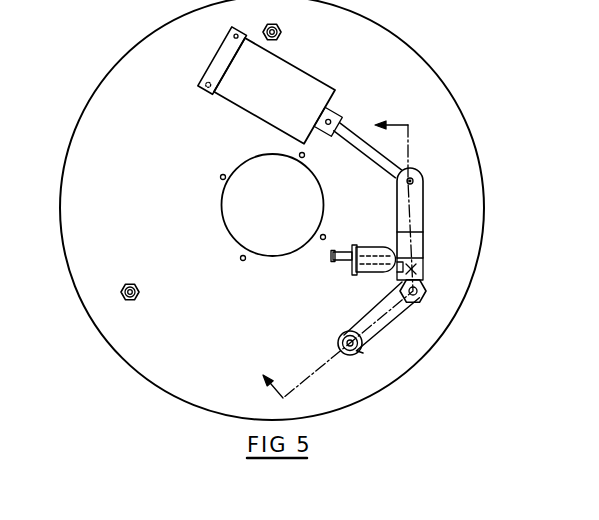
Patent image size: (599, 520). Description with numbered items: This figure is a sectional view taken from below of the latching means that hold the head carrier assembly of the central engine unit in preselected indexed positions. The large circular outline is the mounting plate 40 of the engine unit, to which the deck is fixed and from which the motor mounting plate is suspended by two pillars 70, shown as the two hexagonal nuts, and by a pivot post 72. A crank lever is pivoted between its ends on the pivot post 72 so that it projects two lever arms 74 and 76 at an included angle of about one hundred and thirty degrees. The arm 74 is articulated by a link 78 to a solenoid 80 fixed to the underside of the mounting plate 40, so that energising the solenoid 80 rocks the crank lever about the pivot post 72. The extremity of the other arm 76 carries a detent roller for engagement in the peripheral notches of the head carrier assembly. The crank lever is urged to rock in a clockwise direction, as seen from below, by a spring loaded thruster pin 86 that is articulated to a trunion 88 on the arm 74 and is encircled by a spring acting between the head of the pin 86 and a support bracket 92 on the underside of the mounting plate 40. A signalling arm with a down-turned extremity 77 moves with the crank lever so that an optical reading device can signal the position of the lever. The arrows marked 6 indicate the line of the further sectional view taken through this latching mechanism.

The mounting plate 40 is at (95, 117).
The pillars 70 is at (281, 36).
The solenoid 80 is at (263, 112).
The link 78 is at (362, 154).
The lever arm 74 is at (417, 212).
The trunion 88 is at (416, 264).
The support bracket 92 is at (385, 272).
The spring loaded thruster pin 86 is at (341, 268).
The pivot post 72 is at (413, 298).
The lever arm 76 is at (358, 316).
The down-turned extremity 77 is at (356, 356).
The section line 6- 6 is at (333, 253).